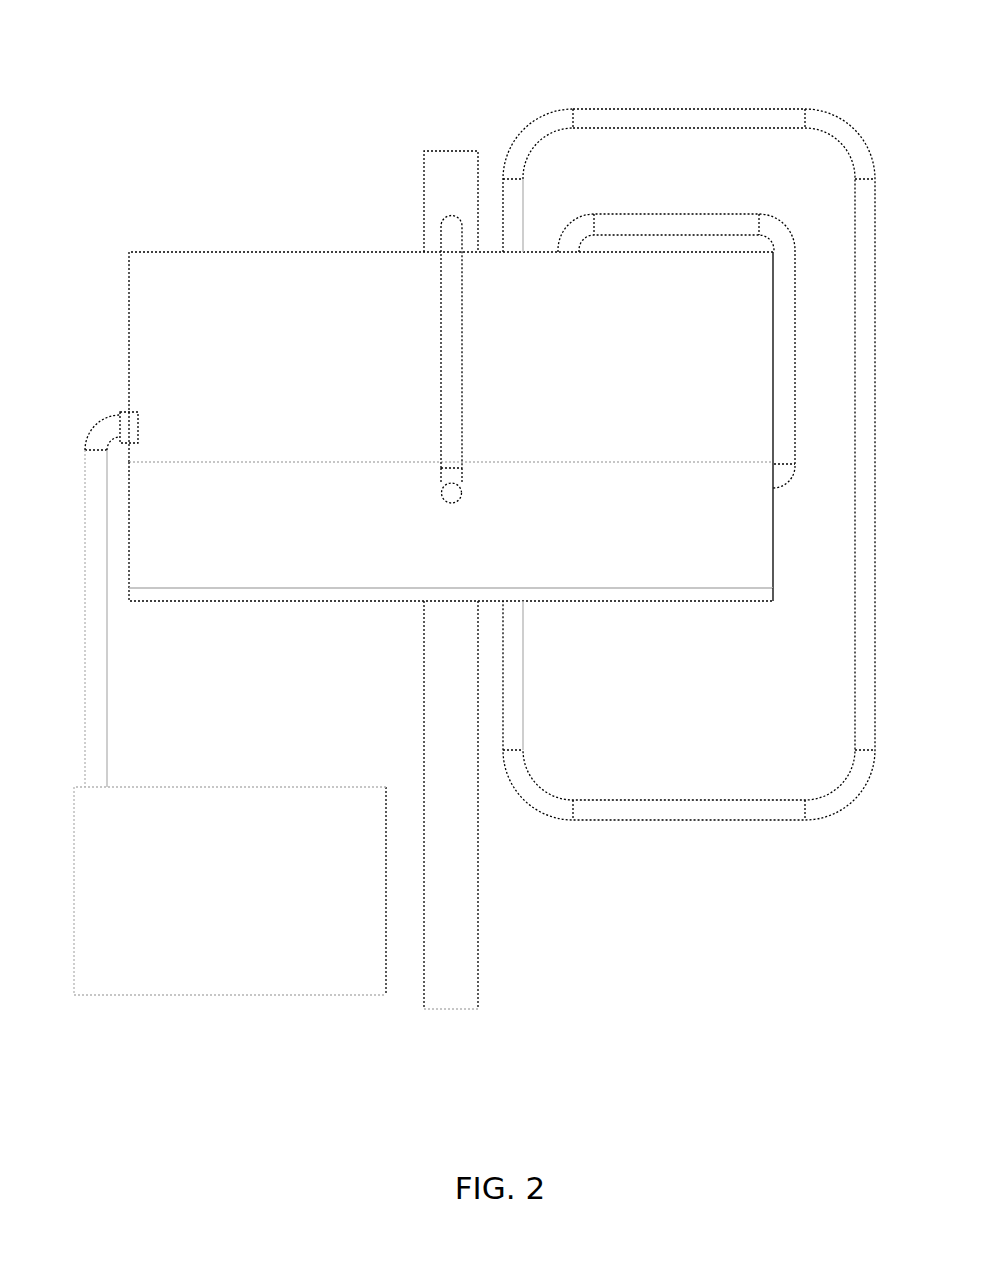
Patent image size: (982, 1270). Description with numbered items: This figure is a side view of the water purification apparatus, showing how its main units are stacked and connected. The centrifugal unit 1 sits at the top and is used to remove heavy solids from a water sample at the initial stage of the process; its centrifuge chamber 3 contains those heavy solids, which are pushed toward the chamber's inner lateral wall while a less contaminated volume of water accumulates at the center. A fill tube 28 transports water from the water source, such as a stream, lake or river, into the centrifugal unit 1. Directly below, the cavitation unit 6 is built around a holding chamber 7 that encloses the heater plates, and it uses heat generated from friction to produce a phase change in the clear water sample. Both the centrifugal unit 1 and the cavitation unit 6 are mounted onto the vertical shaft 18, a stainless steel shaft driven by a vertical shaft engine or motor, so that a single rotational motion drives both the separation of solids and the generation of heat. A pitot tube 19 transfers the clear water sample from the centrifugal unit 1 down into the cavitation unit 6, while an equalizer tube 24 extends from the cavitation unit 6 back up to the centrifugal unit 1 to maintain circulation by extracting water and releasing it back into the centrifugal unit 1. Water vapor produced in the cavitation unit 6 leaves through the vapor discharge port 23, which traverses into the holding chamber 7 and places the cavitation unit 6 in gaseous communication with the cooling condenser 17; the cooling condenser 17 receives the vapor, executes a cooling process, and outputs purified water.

The centrifugal unit 1 is at (408, 422).
The centrifuge chamber 3 is at (281, 362).
The cavitation unit 6 is at (792, 560).
The holding chamber 7 is at (270, 532).
The cooling condenser 17 is at (268, 916).
The vertical shaft 18 is at (437, 690).
The pitot tube 19 is at (740, 200).
The vapor discharge port 23 is at (137, 425).
The equalizer tube 24 is at (717, 100).
The fill tube 28 is at (457, 357).